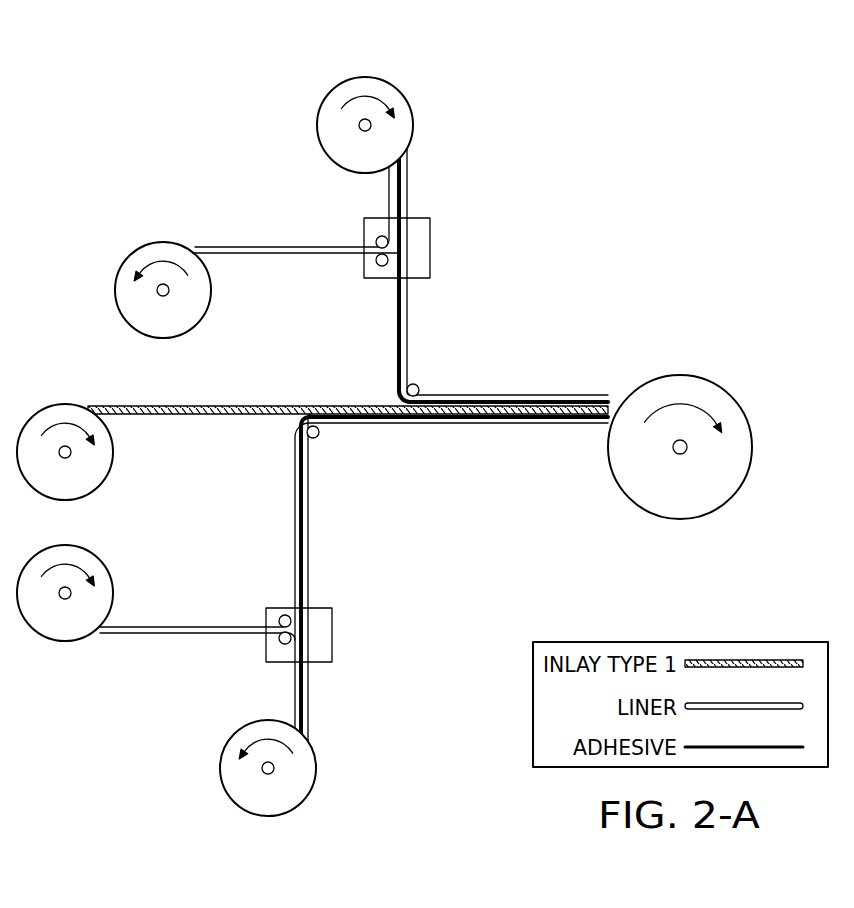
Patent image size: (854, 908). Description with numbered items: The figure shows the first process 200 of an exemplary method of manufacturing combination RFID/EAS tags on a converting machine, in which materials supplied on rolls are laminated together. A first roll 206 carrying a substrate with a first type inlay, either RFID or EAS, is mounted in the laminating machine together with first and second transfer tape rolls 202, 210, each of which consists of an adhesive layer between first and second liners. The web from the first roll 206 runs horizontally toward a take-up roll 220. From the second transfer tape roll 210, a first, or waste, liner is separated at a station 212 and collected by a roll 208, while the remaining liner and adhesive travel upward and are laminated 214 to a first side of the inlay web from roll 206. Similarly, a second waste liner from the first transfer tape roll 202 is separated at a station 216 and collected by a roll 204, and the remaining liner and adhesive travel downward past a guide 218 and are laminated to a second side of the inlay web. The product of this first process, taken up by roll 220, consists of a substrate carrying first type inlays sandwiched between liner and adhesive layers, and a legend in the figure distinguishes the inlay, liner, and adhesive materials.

The web processing system 200 is at (676, 108).
The first transfer tape roll 202 is at (362, 77).
The roll 204 is at (160, 242).
The first roll 206 is at (62, 404).
The roll 208 is at (62, 642).
The second transfer tape roll 210 is at (262, 817).
The lower lamination station 212 is at (333, 636).
The lamination 214 is at (318, 437).
The lamination 216 is at (433, 244).
The upper guide roller 218 is at (418, 385).
The roll 220 is at (690, 376).